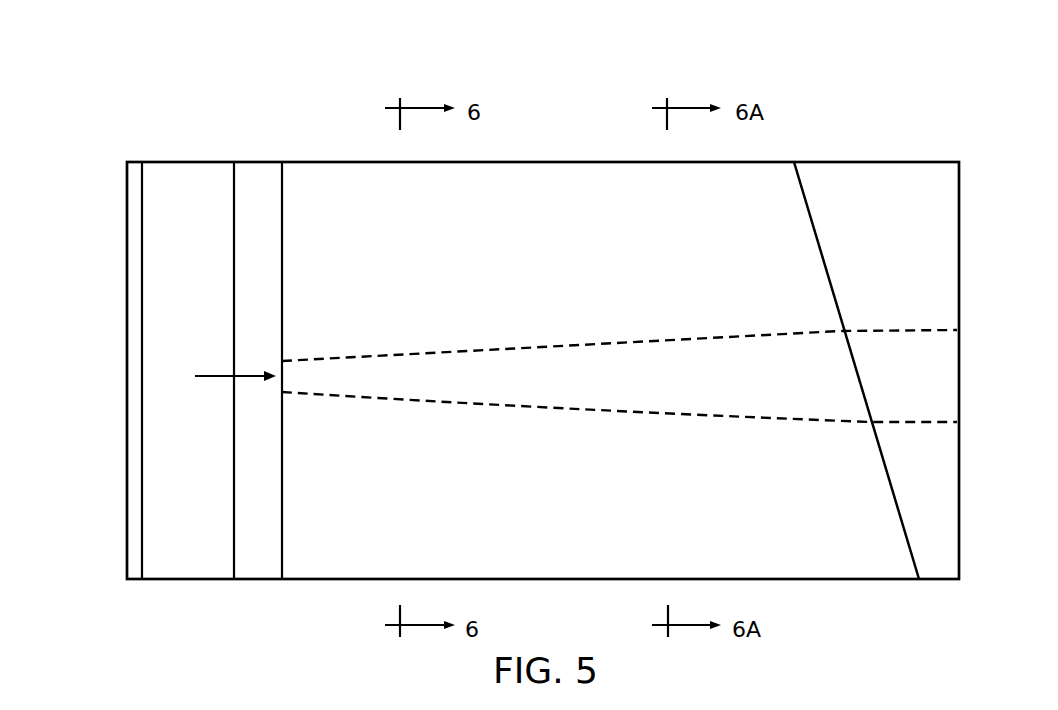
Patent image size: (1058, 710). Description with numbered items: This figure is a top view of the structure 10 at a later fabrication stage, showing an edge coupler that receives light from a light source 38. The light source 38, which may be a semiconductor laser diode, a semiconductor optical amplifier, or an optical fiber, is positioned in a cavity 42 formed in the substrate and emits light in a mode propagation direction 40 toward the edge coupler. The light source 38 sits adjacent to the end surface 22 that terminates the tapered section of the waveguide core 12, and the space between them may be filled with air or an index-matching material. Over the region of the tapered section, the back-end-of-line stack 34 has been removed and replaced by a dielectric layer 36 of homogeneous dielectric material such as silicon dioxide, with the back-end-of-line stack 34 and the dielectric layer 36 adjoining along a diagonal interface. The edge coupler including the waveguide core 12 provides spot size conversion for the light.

The structure 10 is at (122, 41).
The waveguide core 12 is at (683, 413).
The end surface 22 is at (282, 368).
The back-end-of-line stack 34 is at (875, 207).
The dielectric layer 36 is at (559, 190).
The light source 38 is at (189, 195).
The mode propagation direction 40 is at (229, 378).
The cavity 42 is at (261, 370).